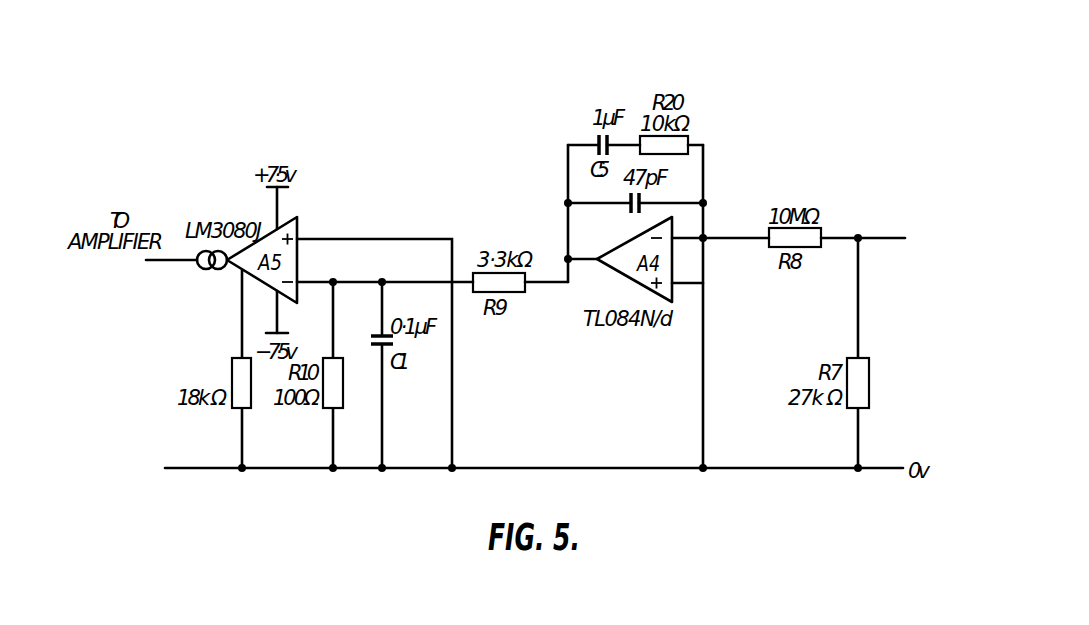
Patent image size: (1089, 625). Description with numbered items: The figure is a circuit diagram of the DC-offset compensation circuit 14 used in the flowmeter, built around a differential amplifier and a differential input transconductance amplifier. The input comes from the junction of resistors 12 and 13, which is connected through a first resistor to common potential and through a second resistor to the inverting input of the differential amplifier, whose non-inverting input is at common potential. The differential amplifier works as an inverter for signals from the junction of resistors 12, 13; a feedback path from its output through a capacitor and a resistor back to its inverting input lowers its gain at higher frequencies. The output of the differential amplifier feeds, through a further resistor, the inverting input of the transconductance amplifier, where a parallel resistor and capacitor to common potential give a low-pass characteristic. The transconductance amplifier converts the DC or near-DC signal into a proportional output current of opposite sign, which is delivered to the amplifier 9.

The amplifier 9 is at (146, 260).
The DC-offset compensation circuit 14 is at (581, 80).
The resistor 12 is at (972, 230).
The resistor 13 is at (963, 263).